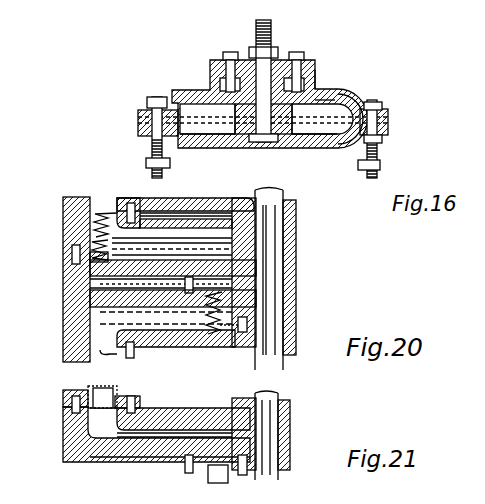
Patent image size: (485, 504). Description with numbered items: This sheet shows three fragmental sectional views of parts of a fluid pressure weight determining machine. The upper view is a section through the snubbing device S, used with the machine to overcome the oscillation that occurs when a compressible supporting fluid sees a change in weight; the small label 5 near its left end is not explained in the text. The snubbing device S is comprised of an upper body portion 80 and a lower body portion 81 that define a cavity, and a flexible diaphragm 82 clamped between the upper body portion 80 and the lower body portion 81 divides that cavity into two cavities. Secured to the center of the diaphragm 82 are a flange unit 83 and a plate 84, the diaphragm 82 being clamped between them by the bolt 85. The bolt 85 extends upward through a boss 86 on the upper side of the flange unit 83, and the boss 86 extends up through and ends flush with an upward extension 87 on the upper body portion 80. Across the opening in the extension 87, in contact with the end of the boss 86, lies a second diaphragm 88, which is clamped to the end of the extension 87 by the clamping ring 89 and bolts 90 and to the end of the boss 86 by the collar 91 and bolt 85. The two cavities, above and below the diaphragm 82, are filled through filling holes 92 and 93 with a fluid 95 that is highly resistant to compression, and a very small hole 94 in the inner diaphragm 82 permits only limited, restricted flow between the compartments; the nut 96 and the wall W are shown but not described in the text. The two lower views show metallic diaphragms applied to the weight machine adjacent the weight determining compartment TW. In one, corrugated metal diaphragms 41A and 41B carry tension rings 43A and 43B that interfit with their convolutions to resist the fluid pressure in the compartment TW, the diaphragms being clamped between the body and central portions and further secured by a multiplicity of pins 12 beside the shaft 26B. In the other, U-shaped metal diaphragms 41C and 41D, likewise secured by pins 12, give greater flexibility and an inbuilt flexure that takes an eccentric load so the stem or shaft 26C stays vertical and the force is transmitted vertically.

In FIG. 16, the pipe coupling assembly 5 is at (138, 116).
In FIG. 16, the upper body portion 80 is at (364, 104).
In FIG. 16, the lower body portion 81 is at (320, 146).
In FIG. 16, the flexible diaphragm 82 is at (392, 125).
In FIG. 16, the flange unit 83 is at (230, 147).
In FIG. 16, the plate 84 is at (272, 147).
In FIG. 16, the bolt 85 is at (272, 42).
In FIG. 16, the boss 86 is at (342, 96).
In FIG. 16, the upward extension 87 is at (207, 88).
In FIG. 16, the second diaphragm 88 is at (318, 80).
In FIG. 16, the clamping ring 89 is at (306, 63).
In FIG. 16, the bolts 90 is at (229, 55).
In FIG. 16, the collar 91 is at (250, 57).
In FIG. 16, the filling hole 92 is at (151, 98).
In FIG. 16, the filling hole 93 is at (148, 148).
In FIG. 16, the small hole 94 is at (170, 92).
In FIG. 16, the fluid 95 is at (384, 112).
In FIG. 16, the nut 96 is at (382, 166).
In FIG. 20, the wall W is at (62, 323).
In FIG. 20, the pins 12 is at (70, 264).
In FIG. 21, the pins 12 is at (66, 401).
In FIG. 20, the corrugated metal diaphragm 41A is at (102, 211).
In FIG. 20, the corrugated metal diaphragm 41B is at (232, 290).
In FIG. 21, the U-shaped metal diaphragm 41C is at (118, 401).
In FIG. 21, the U-shaped metal diaphragm 41D is at (212, 480).
In FIG. 20, the tension ring 43A is at (210, 313).
In FIG. 20, the tension ring 43B is at (92, 246).
In FIG. 20, the tube 26B is at (285, 197).
In FIG. 21, the stem or shaft 26C is at (279, 397).
In FIG. 20, the weight determining compartment TW is at (220, 252).
In FIG. 21, the weight determining compartment TW is at (290, 437).